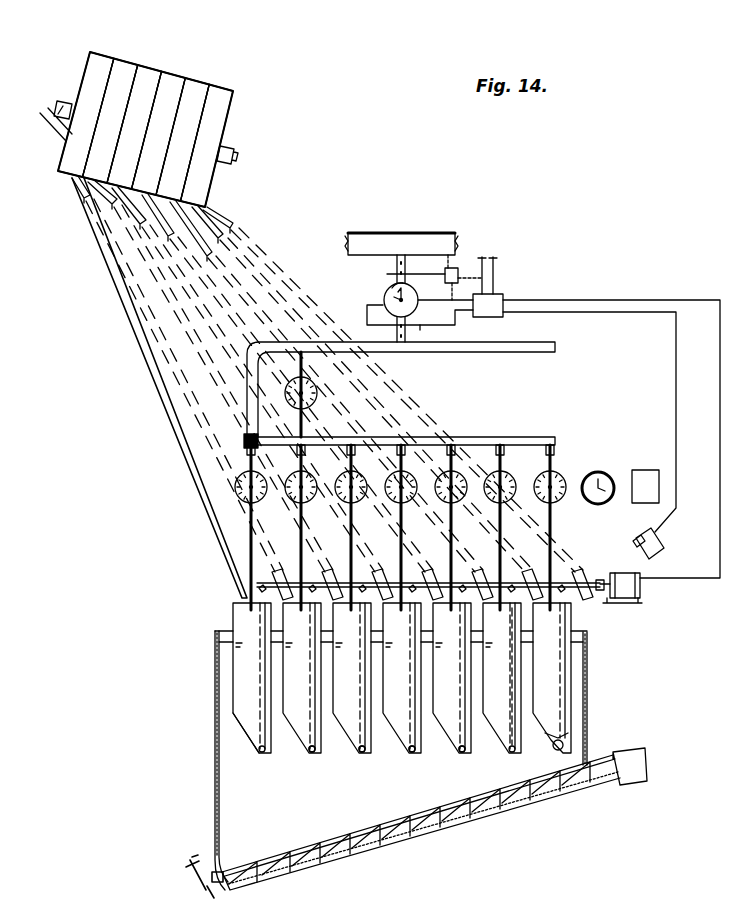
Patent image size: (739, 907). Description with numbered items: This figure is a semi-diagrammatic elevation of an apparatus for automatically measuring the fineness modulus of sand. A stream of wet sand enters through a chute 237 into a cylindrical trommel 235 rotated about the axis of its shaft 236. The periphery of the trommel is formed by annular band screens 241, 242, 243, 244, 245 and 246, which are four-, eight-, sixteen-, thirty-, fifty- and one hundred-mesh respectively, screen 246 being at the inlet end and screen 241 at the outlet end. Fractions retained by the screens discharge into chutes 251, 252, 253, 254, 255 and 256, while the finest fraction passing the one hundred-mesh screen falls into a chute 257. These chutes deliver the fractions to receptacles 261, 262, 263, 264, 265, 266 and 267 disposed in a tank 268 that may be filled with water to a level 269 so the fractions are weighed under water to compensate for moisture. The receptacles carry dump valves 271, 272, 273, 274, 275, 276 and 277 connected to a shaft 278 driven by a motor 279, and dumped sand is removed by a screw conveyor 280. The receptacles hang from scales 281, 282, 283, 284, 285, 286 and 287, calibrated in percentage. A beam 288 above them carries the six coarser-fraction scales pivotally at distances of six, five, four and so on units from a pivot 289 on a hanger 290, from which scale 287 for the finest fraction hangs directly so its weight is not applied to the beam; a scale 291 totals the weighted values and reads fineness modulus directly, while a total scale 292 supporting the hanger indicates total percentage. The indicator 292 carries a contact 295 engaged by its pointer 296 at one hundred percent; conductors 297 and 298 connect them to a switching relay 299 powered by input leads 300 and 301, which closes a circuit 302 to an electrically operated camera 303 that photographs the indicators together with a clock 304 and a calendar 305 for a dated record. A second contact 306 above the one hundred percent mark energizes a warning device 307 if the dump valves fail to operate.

The cylindrical trommel 235 is at (266, 109).
The shaft 236 is at (240, 156).
The chute 237 is at (56, 106).
The screen 241 is at (232, 90).
The screen 242 is at (205, 82).
The screen 243 is at (176, 75).
The screen 244 is at (150, 68).
The screen 245 is at (123, 61).
The screen 246 is at (97, 54).
The chute 251 is at (218, 210).
The chute 252 is at (222, 234).
The chute 253 is at (212, 254).
The chute 254 is at (166, 236).
The chute 255 is at (138, 226).
The chute 256 is at (110, 206).
The chute 257 is at (84, 201).
The receptacle 261 is at (568, 724).
The receptacle 262 is at (518, 688).
The receptacle 263 is at (443, 744).
The receptacle 264 is at (392, 744).
The receptacle 265 is at (345, 744).
The receptacle 266 is at (290, 744).
The receptacle 267 is at (246, 720).
The tank 268 is at (214, 680).
The water level 269 is at (215, 633).
The dump valve 271 is at (557, 752).
The dump valve 272 is at (508, 755).
The dump valve 273 is at (458, 755).
The dump valve 274 is at (408, 755).
The dump valve 275 is at (358, 755).
The dump valve 276 is at (308, 755).
The dump valve 277 is at (259, 755).
The shaft 278 is at (585, 588).
The motor 279 is at (641, 590).
The screw conveyor 280 is at (585, 786).
The scale 281 is at (561, 500).
The scale 282 is at (511, 500).
The scale 283 is at (462, 500).
The scale 284 is at (412, 500).
The scale 285 is at (362, 500).
The scale 286 is at (312, 500).
The scale 287 is at (262, 500).
The beam 288 is at (432, 437).
The pivot 289 is at (247, 438).
The hanger 290 is at (420, 353).
The scale 291 is at (318, 394).
The total scale 292 is at (383, 300).
The contact 295 is at (367, 318).
The pointer 296 is at (444, 281).
The conductor 297 is at (430, 326).
The conductor 298 is at (442, 302).
The switching relay 299 is at (504, 296).
The input lead 300 is at (483, 264).
The input lead 301 is at (498, 259).
The circuit 302 is at (676, 380).
The electrically operated camera 303 is at (662, 549).
The clock 304 is at (598, 471).
The calendar 305 is at (645, 470).
The second contact 306 is at (386, 289).
The warning device 307 is at (401, 244).